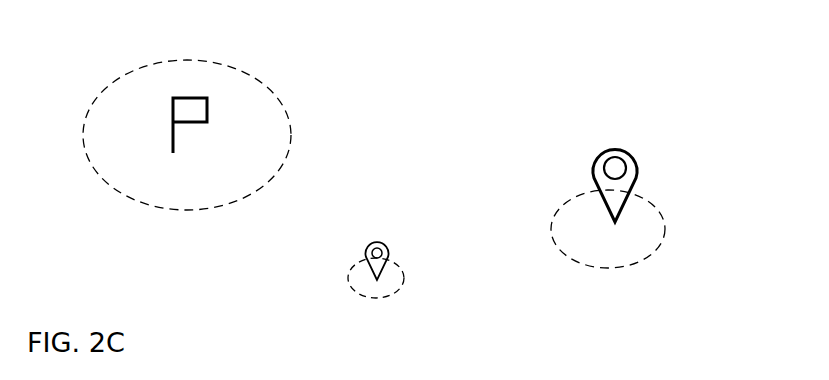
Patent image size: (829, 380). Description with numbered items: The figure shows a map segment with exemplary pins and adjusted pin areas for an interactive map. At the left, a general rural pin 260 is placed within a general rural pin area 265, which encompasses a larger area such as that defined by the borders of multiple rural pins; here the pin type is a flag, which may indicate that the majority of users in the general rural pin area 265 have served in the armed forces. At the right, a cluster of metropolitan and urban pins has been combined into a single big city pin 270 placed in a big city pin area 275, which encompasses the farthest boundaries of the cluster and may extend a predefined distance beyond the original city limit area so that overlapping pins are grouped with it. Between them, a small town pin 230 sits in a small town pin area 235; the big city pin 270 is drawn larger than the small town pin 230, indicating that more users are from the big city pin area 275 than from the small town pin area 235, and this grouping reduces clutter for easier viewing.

The small town pin 230 is at (356, 250).
The small town pin area 235 is at (424, 287).
The general rural pin 260 is at (249, 147).
The general rural pin area 265 is at (110, 80).
The big city pin 270 is at (580, 164).
The big city pin area 275 is at (679, 240).